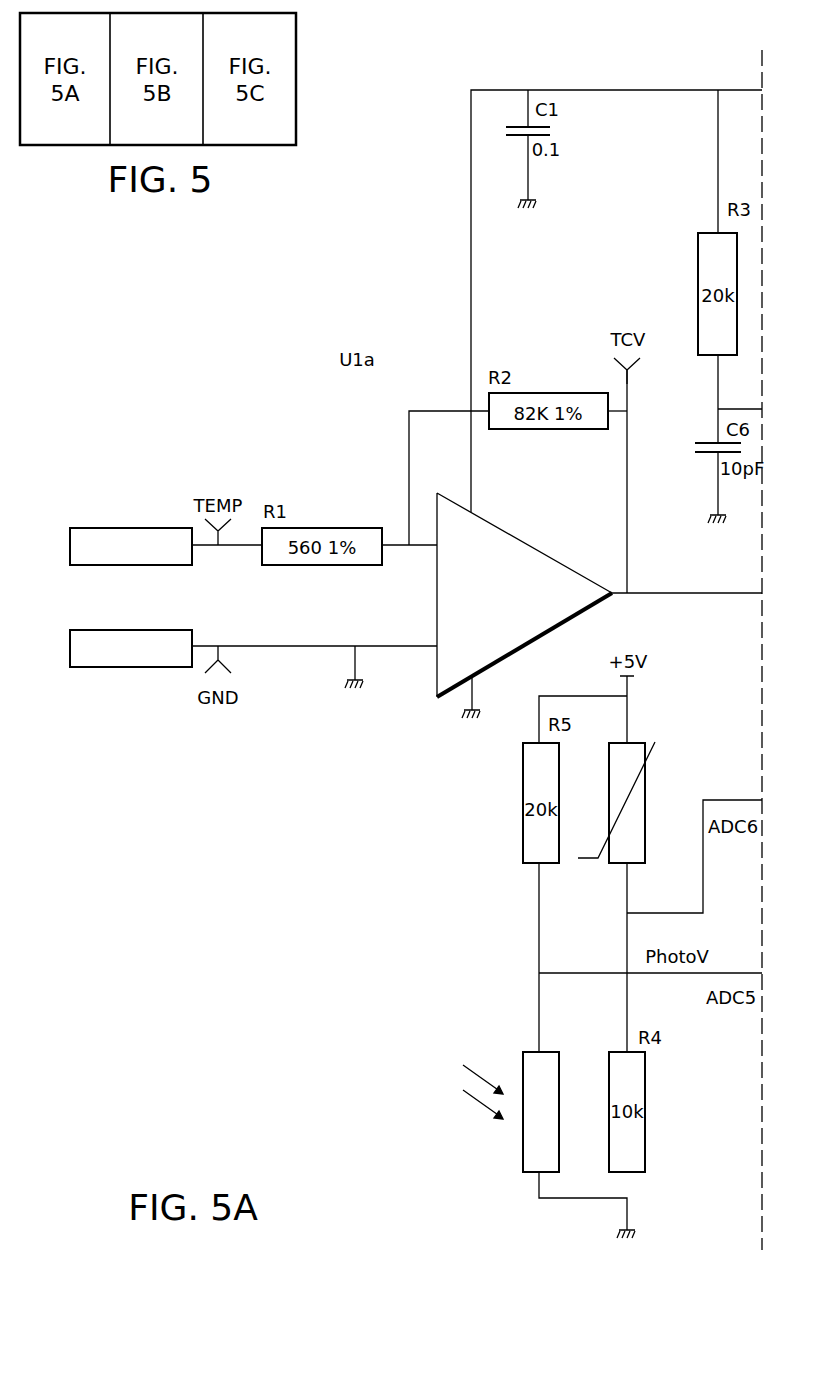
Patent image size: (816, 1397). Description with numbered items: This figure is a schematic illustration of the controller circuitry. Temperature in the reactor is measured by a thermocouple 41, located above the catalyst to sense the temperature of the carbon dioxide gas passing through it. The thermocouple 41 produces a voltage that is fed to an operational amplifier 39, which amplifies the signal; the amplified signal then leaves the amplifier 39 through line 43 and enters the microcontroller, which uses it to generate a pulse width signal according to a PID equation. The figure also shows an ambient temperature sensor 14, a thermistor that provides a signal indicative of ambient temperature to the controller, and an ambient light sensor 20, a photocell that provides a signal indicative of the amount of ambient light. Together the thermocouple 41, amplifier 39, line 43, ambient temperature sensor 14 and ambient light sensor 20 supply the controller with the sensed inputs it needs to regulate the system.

The temperature sensor 41 is at (119, 412).
The amplifier 39 is at (436, 680).
The line 43 is at (673, 596).
The ambient temperature sensor 14 is at (613, 865).
The ambient light sensor 20 is at (522, 1157).